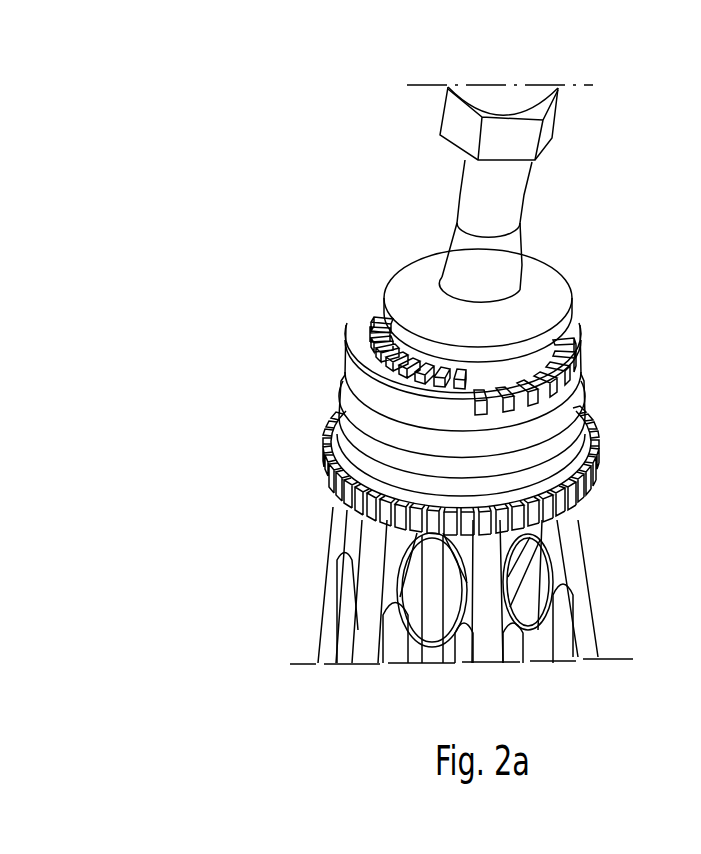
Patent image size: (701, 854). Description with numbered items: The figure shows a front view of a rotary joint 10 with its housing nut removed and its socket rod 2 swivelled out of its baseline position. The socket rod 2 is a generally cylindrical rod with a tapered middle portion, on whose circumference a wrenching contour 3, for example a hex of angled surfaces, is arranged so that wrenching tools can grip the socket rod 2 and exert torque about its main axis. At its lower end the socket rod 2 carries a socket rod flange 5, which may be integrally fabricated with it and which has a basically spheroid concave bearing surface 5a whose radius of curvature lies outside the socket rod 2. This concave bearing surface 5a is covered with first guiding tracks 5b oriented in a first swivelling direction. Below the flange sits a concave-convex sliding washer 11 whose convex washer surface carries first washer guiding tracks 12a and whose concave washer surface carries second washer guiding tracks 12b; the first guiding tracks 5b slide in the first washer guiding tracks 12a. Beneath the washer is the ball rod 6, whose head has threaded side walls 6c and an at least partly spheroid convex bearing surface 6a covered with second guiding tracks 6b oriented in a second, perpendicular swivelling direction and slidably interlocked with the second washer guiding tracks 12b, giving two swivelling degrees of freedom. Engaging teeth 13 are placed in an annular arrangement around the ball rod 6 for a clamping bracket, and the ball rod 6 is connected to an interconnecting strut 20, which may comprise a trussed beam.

The socket rod 2 is at (524, 203).
The wrenching contour 3 is at (556, 126).
The socket rod flange 5 is at (580, 305).
The concave bearing surface 5a is at (566, 342).
The first guiding tracks 5b is at (437, 355).
The ball rod 6 is at (318, 392).
The convex bearing surface 6a is at (372, 370).
The second guiding tracks 6b is at (566, 383).
The threaded side walls 6c is at (338, 412).
The rotary joint 10 is at (275, 188).
The concave-convex sliding washer 11 is at (368, 316).
The first washer guiding tracks 12a is at (360, 335).
The second washer guiding tracks 12b is at (580, 414).
The engaging teeth 13 is at (326, 468).
The interconnecting strut 20 is at (332, 543).